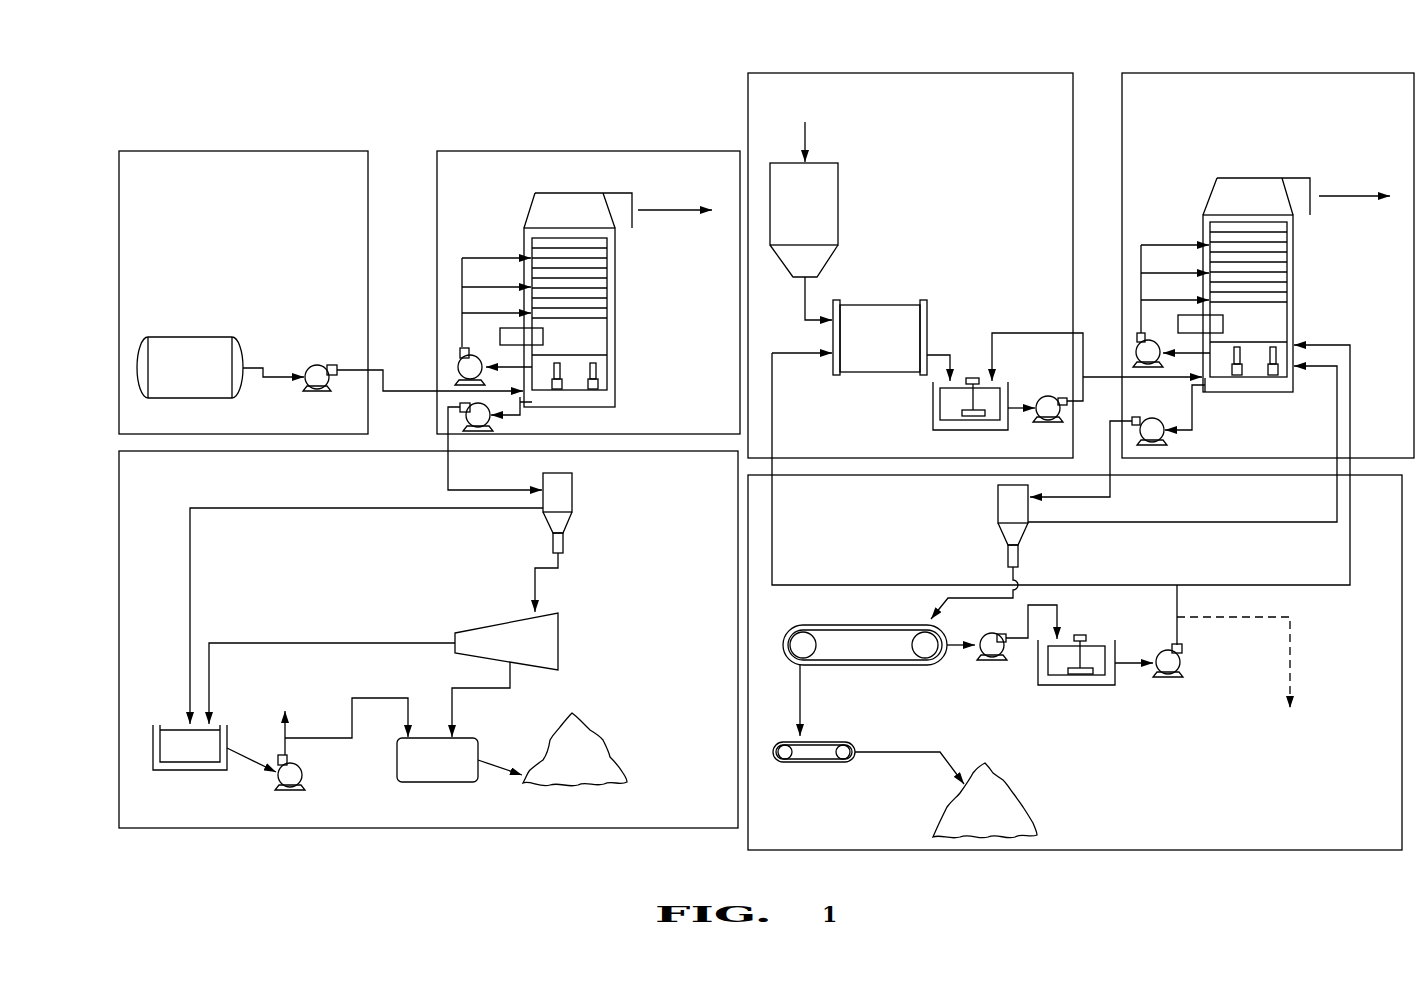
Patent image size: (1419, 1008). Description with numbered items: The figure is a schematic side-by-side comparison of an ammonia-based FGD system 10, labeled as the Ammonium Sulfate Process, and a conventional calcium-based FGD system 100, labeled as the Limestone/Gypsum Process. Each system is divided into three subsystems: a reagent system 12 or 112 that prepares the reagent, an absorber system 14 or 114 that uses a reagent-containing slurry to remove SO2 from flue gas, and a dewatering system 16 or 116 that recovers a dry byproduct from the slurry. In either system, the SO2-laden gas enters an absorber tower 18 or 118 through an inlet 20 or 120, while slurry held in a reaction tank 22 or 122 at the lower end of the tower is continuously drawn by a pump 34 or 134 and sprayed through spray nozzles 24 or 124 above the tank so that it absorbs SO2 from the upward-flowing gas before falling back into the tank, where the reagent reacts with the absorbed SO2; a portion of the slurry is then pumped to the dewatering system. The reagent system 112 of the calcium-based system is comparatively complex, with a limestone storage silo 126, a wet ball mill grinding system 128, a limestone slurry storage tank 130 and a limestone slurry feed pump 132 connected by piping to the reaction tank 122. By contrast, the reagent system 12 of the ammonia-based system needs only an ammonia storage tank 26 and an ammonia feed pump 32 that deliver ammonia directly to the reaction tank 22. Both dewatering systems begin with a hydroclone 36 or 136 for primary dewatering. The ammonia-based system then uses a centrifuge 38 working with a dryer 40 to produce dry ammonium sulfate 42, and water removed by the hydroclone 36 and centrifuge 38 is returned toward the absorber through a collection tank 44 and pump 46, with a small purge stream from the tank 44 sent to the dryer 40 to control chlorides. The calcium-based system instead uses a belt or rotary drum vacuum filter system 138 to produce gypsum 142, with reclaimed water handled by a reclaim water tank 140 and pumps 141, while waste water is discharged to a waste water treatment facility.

The ammonia-based FGD system 10 is at (241, 131).
The reagent system 12 is at (330, 238).
The absorber system 14 is at (712, 418).
The dewatering system 16 is at (167, 506).
The absorber tower 18 is at (615, 272).
The inlet 20 is at (500, 337).
The reaction tank 22 is at (601, 372).
The spray nozzles 24 is at (540, 272).
The ammonia storage tank 26 is at (235, 395).
The ammonia feed pump 32 is at (318, 364).
The pump 34 is at (458, 366).
The hydroclone 36 is at (572, 518).
The centrifuge 38 is at (500, 623).
The dryer 40 is at (432, 736).
The ammonium sulfate 42 is at (596, 742).
The collection tank 44 is at (173, 738).
The pump 46 is at (303, 772).
The calcium-based FGD system 100 is at (801, 67).
The reagent system 112 is at (1020, 172).
The absorber system 114 is at (1362, 155).
The dewatering system 116 is at (825, 513).
The absorber tower 118 is at (1293, 275).
The inlet 120 is at (1185, 325).
The reaction tank 122 is at (1223, 365).
The spray nozzles 124 is at (1213, 262).
The limestone storage silo 126 is at (838, 215).
The wet ball mill grinding system 128 is at (853, 365).
The limestone slurry storage tank 130 is at (960, 395).
The limestone slurry feed pump 132 is at (1048, 395).
The pump 134 is at (1147, 368).
The hydroclone 136 is at (998, 505).
The vacuum filter system 138 is at (847, 622).
The reclaim water tank 140 is at (1096, 655).
The pumps 141 is at (992, 660).
The gypsum 142 is at (1013, 800).